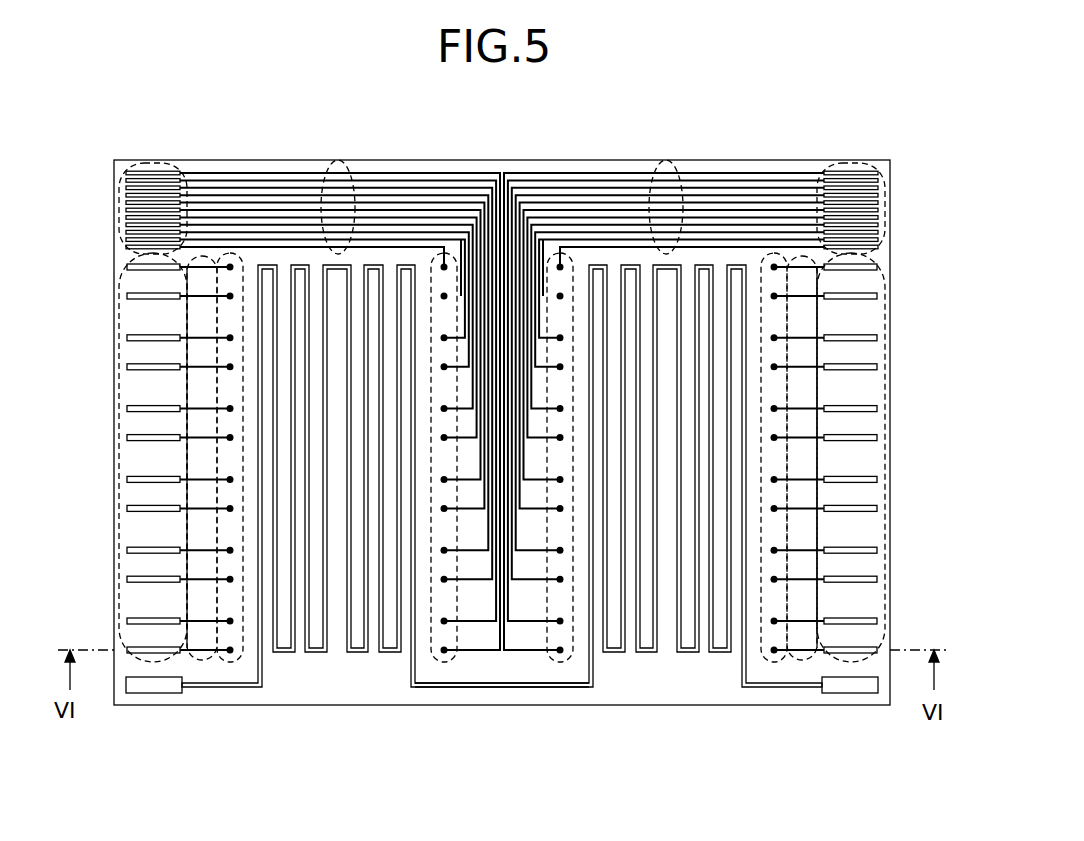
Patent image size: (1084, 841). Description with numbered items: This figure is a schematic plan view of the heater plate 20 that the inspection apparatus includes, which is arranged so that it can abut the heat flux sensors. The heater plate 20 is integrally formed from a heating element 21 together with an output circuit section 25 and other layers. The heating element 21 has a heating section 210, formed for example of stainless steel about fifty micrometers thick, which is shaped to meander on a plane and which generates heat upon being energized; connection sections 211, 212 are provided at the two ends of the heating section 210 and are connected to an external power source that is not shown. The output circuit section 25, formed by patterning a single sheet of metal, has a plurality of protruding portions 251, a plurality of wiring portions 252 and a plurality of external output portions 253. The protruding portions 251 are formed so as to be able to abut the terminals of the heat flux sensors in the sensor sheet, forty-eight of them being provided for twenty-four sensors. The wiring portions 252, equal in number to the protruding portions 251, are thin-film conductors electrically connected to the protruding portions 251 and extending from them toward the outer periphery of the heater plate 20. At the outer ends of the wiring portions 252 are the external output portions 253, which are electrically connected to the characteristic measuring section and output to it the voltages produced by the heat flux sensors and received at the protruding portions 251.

The heater plate 20 is at (262, 160).
The heating element 21 is at (512, 688).
The output circuit section 25 is at (885, 255).
The heating section 210 is at (356, 654).
The connection section 211 is at (140, 696).
The connection section 212 is at (866, 696).
The protruding portion 251 is at (232, 664).
The wiring portion 252 is at (338, 160).
The external output portion 253 is at (138, 162).